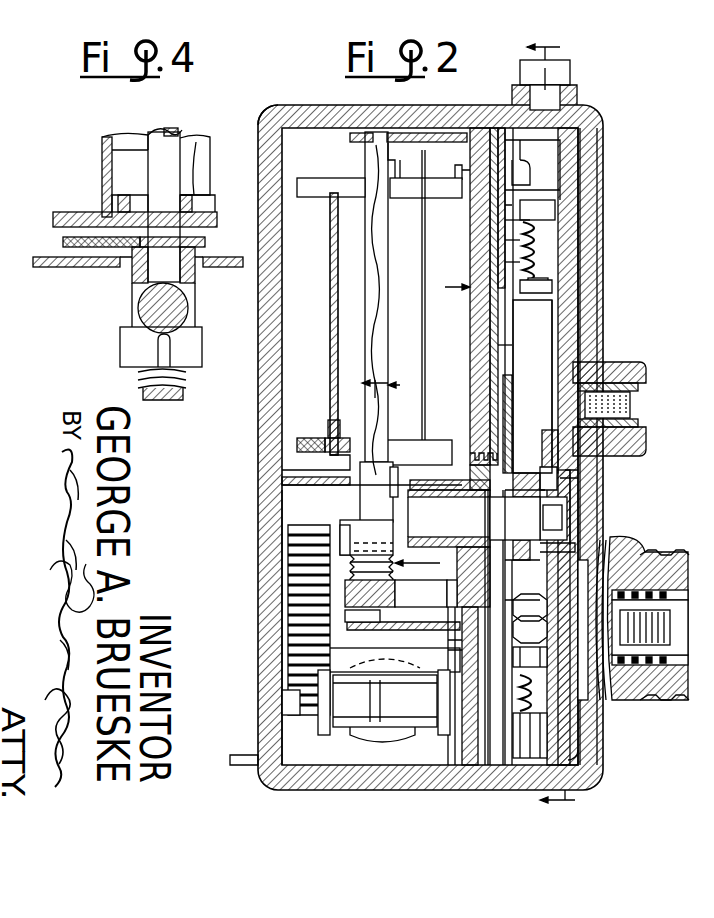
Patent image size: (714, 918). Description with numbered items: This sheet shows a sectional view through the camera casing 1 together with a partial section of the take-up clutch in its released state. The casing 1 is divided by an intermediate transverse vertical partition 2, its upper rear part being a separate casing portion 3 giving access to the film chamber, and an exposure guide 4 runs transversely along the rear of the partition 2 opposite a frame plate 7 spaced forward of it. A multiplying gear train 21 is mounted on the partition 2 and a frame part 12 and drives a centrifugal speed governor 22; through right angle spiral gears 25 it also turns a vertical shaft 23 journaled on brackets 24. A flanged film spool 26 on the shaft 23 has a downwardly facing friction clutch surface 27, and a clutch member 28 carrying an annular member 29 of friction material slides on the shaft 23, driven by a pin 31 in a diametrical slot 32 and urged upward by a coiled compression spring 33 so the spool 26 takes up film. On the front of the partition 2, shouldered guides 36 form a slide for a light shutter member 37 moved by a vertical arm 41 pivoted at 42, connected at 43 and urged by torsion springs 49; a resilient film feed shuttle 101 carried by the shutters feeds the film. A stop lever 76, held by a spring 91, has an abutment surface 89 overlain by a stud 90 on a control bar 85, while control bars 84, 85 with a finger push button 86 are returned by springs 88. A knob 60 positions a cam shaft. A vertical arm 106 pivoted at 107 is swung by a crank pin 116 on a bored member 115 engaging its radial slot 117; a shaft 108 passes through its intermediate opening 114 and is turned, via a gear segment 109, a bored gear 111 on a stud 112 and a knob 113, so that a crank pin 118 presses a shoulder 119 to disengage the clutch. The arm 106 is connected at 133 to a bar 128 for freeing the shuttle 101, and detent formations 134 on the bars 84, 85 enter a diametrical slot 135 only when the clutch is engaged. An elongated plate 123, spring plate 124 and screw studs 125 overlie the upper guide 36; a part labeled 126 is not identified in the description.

In FIG. 2, the camera casing 1 is at (324, 105).
In FIG. 2, the intermediate transverse vertical partition 2 is at (478, 105).
In FIG. 2, the separate casing portion 3 is at (274, 105).
In FIG. 2, the exposure guide 4 is at (416, 425).
In FIG. 2, the frame plate 7 is at (575, 327).
In FIG. 2, the frame part 12 is at (282, 484).
In FIG. 2, the multiplying gear train 21 is at (282, 612).
In FIG. 2, the centrifugal speed governor 22 is at (355, 730).
In FIG. 4, the vertical shaft 23 is at (157, 134).
In FIG. 2, the vertical shaft 23 is at (365, 157).
In FIG. 2, the brackets 24 is at (396, 150).
In FIG. 2, the right angle spiral gears 25 is at (398, 600).
In FIG. 4, the flanged film spool 26 is at (102, 168).
In FIG. 2, the flanged film spool 26 is at (330, 320).
In FIG. 4, the friction clutch surface 27 is at (53, 224).
In FIG. 2, the friction clutch surface 27 is at (318, 439).
In FIG. 4, the clutch member 28 is at (135, 280).
In FIG. 2, the clutch member 28 is at (300, 462).
In FIG. 4, the annular member of friction material 29 is at (63, 244).
In FIG. 2, the annular member of friction material 29 is at (297, 445).
In FIG. 4, the pin 31 is at (158, 348).
In FIG. 2, the pin 31 is at (340, 539).
In FIG. 4, the diametrical slot 32 is at (150, 364).
In FIG. 2, the diametrical slot 32 is at (344, 519).
In FIG. 4, the coiled compression spring 33 is at (140, 385).
In FIG. 2, the coiled compression spring 33 is at (350, 562).
In FIG. 2, the shouldered guides 36 is at (488, 118).
In FIG. 2, the light shutter member 37 is at (470, 394).
In FIG. 2, the vertical arm 41 is at (468, 354).
In FIG. 2, the pivot 42 is at (585, 740).
In FIG. 2, the operable connection 43 is at (500, 258).
In FIG. 2, the torsion springs 49 is at (580, 760).
In FIG. 2, the knob 60 is at (678, 545).
In FIG. 2, the stop lever 76 is at (580, 728).
In FIG. 2, the control bar 84 is at (580, 180).
In FIG. 2, the control bar 85 is at (522, 425).
In FIG. 2, the finger push button 86 is at (560, 72).
In FIG. 2, the springs 88 is at (548, 252).
In FIG. 2, the abutment surface 89 is at (585, 715).
In FIG. 2, the stud 90 is at (590, 710).
In FIG. 2, the spring 91 is at (612, 700).
In FIG. 2, the film feed shuttle 101 is at (500, 222).
In FIG. 2, the vertical arm 106 is at (512, 383).
In FIG. 2, the pivotal mounting 107 is at (462, 760).
In FIG. 4, the shaft 108 is at (185, 293).
In FIG. 2, the shaft 108 is at (560, 522).
In FIG. 2, the gear segment 109 is at (580, 495).
In FIG. 2, the bored gear 111 is at (590, 376).
In FIG. 2, the stud 112 is at (615, 410).
In FIG. 2, the knob 113 is at (640, 376).
In FIG. 2, the intermediate opening 114 is at (485, 538).
In FIG. 2, the bored member 115 is at (560, 548).
In FIG. 2, the crank pin 116 is at (490, 515).
In FIG. 2, the radial slot 117 is at (520, 467).
In FIG. 4, the crank pin 118 is at (138, 307).
In FIG. 2, the crank pin 118 is at (414, 518).
In FIG. 4, the shoulder 119 is at (185, 325).
In FIG. 2, the shoulder 119 is at (449, 531).
In FIG. 2, the elongated plate 123 is at (500, 205).
In FIG. 2, the spring plate 124 is at (600, 150).
In FIG. 2, the screw studs 125 is at (600, 158).
In FIG. 2, the contact 126 is at (500, 240).
In FIG. 2, the bar 128 is at (462, 190).
In FIG. 2, the operative connection 133 is at (597, 203).
In FIG. 2, the detent formations 134 is at (600, 466).
In FIG. 2, the diametrical slot 135 is at (575, 485).